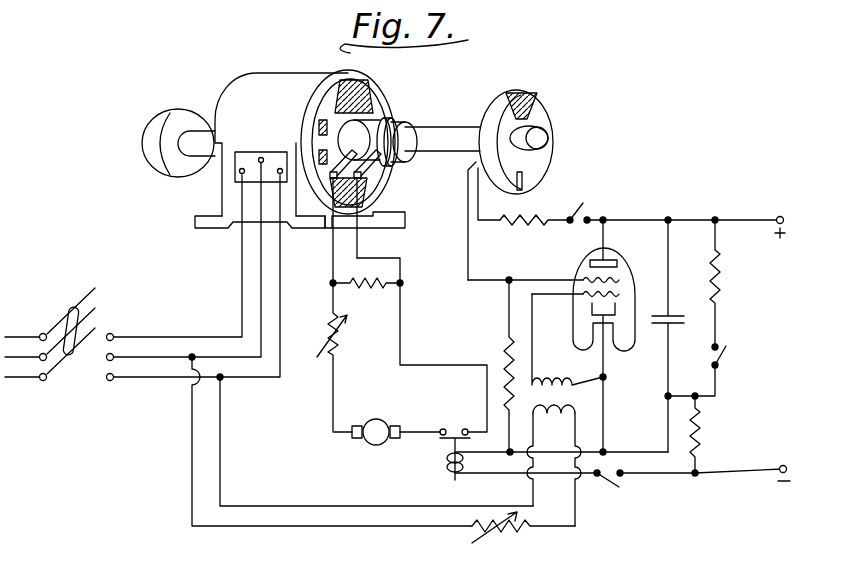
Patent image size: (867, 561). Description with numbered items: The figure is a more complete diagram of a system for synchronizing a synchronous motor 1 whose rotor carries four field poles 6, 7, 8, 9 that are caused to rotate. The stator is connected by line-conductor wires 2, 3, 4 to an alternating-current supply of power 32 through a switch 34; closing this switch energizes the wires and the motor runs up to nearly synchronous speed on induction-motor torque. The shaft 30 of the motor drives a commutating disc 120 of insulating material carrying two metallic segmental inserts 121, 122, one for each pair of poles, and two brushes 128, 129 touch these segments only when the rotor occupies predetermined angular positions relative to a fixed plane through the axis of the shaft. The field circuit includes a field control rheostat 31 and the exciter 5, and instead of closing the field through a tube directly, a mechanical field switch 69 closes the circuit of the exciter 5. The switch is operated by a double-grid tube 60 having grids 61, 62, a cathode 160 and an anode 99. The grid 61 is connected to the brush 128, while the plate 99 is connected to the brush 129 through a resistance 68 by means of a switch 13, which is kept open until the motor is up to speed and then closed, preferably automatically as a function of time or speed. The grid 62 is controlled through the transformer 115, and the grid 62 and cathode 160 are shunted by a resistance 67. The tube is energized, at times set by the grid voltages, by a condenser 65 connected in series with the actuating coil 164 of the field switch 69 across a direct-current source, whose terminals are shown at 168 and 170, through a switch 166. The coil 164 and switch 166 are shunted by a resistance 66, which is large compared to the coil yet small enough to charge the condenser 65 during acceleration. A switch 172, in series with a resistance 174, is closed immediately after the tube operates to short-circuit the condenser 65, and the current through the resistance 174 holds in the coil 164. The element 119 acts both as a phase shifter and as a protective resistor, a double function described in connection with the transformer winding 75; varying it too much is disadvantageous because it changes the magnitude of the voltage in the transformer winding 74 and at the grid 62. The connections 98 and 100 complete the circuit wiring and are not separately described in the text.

The synchronous motor 1 is at (260, 88).
The line-conductor wire 2 is at (134, 337).
The line-conductor wire 3 is at (152, 357).
The line-conductor wire 4 is at (240, 379).
The exciter 5 is at (372, 443).
The field pole 6 is at (370, 100).
The field pole 7 is at (376, 180).
The field pole 8 is at (330, 170).
The field pole 9 is at (335, 108).
The switch 13 is at (582, 180).
The shaft 30 is at (440, 133).
The field control rheostat 31 is at (343, 347).
The alternating-current supply of power 32 is at (48, 334).
The switch 34 is at (70, 303).
The tube 60 is at (588, 277).
The grid 61 is at (583, 272).
The grid 62 is at (622, 289).
The condenser 65 is at (672, 312).
The resistance 66 is at (698, 428).
The resistance 67 is at (506, 346).
The resistance 68 is at (532, 212).
The field switch 69 is at (433, 438).
The transformer winding 74 is at (556, 368).
The transformer winding 75 is at (548, 420).
The conductor 98 is at (270, 505).
The anode 99 is at (610, 256).
The conductor 100 is at (277, 527).
The transformer 115 is at (577, 393).
The element 119 is at (497, 528).
The commutating disc 120 is at (546, 115).
The segmental insert 121 is at (516, 90).
The segmental insert 122 is at (520, 183).
The brush 128 is at (463, 170).
The brush 129 is at (480, 185).
The cathode 160 is at (615, 309).
The actuating coil 164 is at (447, 466).
The switch 166 is at (608, 487).
The terminal 168 is at (778, 212).
The terminal 170 is at (782, 462).
The switch 172 is at (723, 358).
The resistance 174 is at (722, 275).